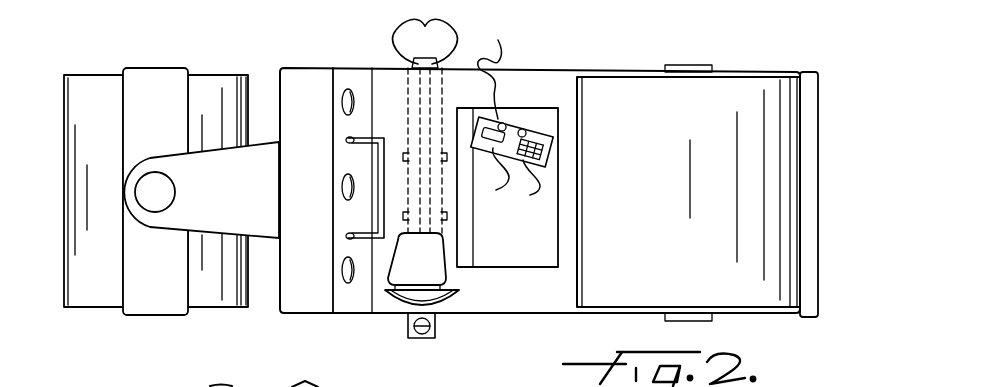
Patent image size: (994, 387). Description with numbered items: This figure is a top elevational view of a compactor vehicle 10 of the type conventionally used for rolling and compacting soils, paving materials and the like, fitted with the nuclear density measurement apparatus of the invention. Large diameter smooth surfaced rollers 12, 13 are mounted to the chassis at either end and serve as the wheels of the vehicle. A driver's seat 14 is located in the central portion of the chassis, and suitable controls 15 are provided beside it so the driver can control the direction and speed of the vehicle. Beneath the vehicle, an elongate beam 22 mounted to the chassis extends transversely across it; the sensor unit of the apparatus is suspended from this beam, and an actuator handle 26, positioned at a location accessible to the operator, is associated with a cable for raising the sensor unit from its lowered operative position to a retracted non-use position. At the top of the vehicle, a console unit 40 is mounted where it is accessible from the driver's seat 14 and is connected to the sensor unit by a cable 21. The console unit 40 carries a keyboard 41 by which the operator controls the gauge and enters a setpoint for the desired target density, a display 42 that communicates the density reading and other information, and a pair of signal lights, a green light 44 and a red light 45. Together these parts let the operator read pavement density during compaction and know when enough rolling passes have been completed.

The compactor vehicle 10 is at (360, 47).
The roller 12 is at (100, 88).
The roller 13 is at (773, 147).
The driver's seat 14 is at (432, 270).
The controls 15 is at (378, 160).
The cable 21 is at (501, 78).
The elongate beam 22 is at (425, 120).
The actuator handle 26 is at (417, 338).
The console unit 40 is at (547, 134).
The keyboard 41 is at (525, 187).
The display 42 is at (493, 175).
The green light 44 is at (505, 122).
The red light 45 is at (525, 129).